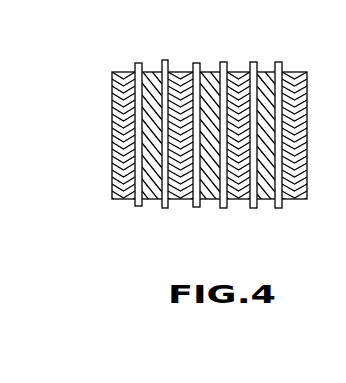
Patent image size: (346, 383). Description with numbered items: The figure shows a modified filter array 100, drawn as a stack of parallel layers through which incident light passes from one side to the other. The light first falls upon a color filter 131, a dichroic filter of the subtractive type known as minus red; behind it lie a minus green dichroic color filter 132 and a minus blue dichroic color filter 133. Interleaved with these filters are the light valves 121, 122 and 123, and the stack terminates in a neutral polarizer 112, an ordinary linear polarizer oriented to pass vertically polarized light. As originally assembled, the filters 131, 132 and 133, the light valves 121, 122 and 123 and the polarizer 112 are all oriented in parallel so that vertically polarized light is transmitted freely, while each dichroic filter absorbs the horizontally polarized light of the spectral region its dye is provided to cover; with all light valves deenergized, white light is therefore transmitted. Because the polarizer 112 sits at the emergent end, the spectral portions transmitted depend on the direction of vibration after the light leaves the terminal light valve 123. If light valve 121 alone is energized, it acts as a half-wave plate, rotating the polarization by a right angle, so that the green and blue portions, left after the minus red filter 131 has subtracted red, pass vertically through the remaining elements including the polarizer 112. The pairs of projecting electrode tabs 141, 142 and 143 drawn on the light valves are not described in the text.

The electrode assembly / cell stack 100 is at (88, 143).
The neutral polarizer 112 is at (297, 203).
The light valve 121 is at (146, 203).
The light valve 122 is at (204, 203).
The light valve 123 is at (264, 203).
The color filter 131 is at (122, 203).
The color filter 132 is at (183, 203).
The color filter 133 is at (244, 203).
The first electrode tab pair 141 is at (166, 58).
The second electrode tab pair 142 is at (225, 58).
The third electrode tab pair 143 is at (280, 58).